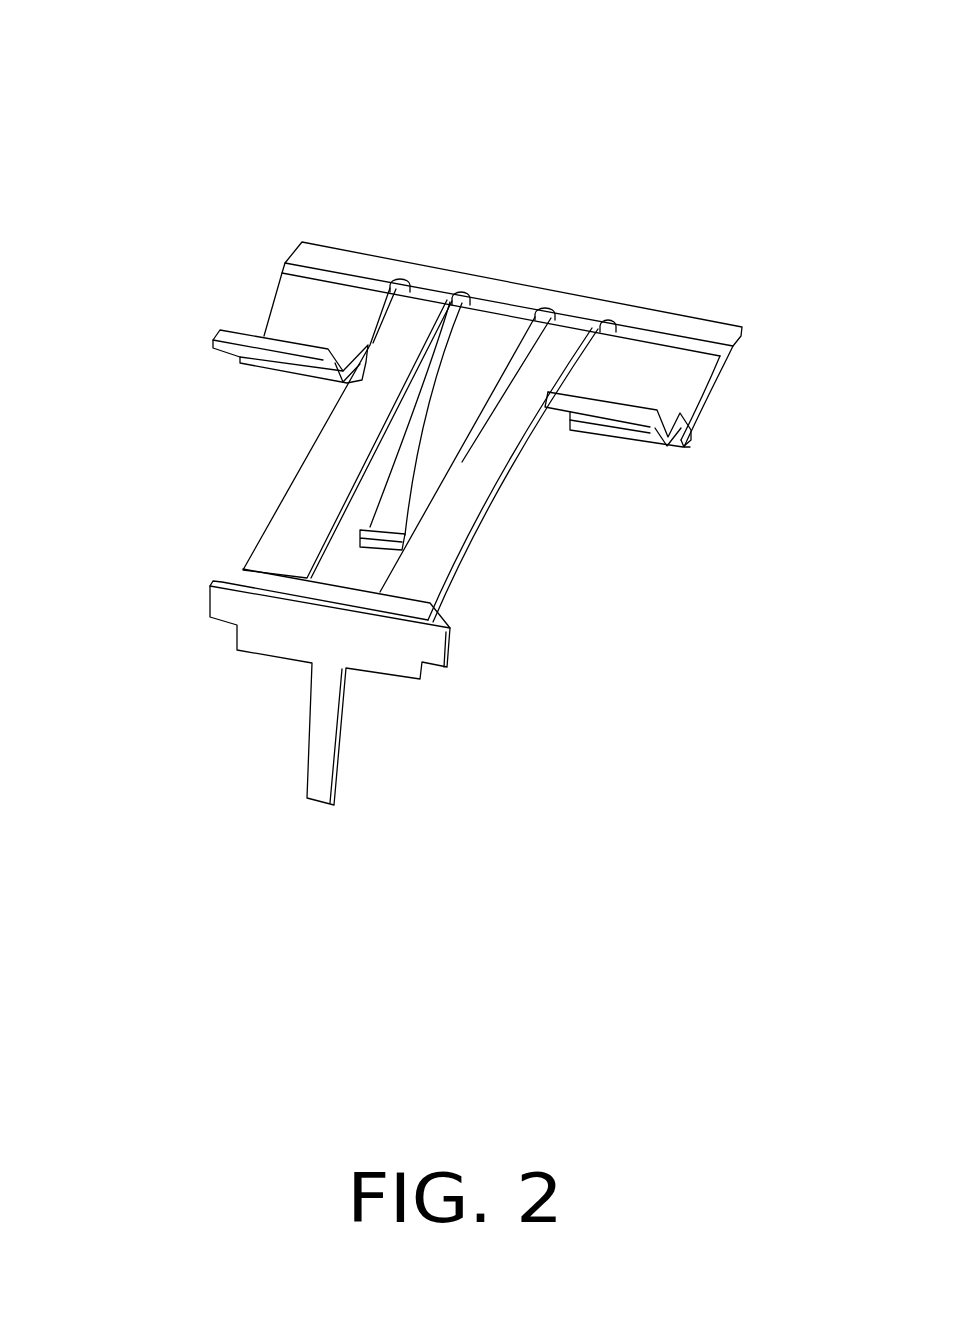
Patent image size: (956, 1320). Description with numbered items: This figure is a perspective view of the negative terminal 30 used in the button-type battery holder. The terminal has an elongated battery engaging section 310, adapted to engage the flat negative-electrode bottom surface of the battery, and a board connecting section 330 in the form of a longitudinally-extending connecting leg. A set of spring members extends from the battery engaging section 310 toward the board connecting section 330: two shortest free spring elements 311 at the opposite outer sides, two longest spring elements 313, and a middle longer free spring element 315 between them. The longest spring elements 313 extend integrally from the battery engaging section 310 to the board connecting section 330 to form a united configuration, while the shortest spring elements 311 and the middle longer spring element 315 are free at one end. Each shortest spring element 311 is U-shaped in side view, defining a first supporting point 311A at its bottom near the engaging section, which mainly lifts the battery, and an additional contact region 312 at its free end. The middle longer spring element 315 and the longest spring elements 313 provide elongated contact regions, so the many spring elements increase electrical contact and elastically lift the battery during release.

The negative terminal 30 is at (468, 39).
The battery engaging section 310 is at (508, 293).
The shortest free spring element 311 is at (658, 377).
The first supporting point 311A is at (358, 360).
The additional contact region 312 is at (610, 410).
The longest spring element 313 is at (413, 578).
The middle longer free spring element 315 is at (397, 513).
The board connecting section 330 is at (322, 770).